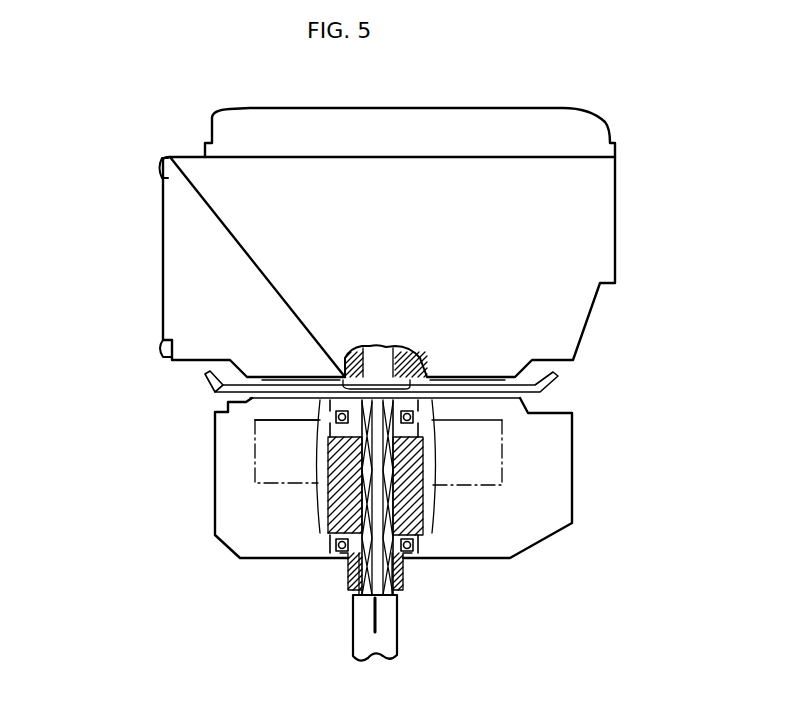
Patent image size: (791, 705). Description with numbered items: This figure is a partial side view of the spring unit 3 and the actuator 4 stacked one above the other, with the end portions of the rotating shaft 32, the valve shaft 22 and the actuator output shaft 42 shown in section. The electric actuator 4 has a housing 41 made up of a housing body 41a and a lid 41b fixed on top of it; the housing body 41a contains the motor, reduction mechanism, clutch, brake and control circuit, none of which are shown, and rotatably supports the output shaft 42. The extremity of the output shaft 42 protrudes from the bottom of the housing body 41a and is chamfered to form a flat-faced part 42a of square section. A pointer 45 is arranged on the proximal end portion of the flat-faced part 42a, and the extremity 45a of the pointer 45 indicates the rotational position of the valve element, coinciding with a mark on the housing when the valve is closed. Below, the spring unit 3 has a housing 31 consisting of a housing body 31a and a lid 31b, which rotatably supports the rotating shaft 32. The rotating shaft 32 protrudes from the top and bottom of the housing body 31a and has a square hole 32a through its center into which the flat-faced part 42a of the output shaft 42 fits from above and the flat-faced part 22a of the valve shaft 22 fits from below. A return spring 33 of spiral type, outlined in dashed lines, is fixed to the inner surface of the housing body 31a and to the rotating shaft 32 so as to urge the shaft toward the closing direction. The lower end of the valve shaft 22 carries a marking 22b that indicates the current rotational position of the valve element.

The actuator 4 is at (617, 202).
The housing 41 is at (80, 100).
The housing body 41a is at (183, 205).
The lid 41b is at (233, 130).
The output shaft 42 is at (378, 353).
The flat-faced part 42a is at (430, 410).
The pointer 45 is at (217, 390).
The extremity of the pointer 45a is at (215, 386).
The spring unit 3 is at (575, 478).
The housing 31 is at (118, 442).
The housing body 31a is at (228, 502).
The lid 31b is at (250, 412).
The rotating shaft 32 is at (343, 497).
The square hole 32a is at (340, 540).
The return spring 33 is at (503, 440).
The valve shaft 22 is at (352, 633).
The flat-faced part 22a is at (404, 578).
The marking 22b is at (380, 618).